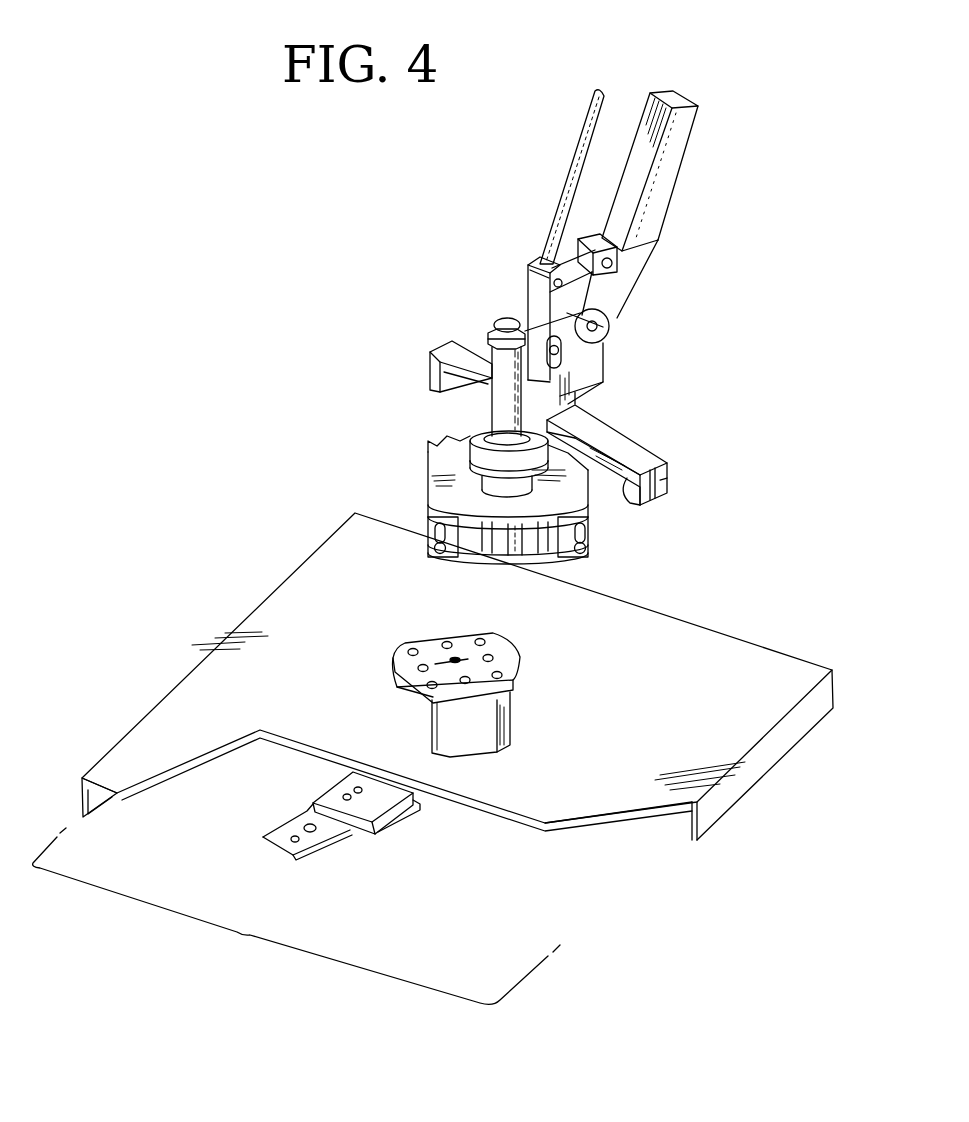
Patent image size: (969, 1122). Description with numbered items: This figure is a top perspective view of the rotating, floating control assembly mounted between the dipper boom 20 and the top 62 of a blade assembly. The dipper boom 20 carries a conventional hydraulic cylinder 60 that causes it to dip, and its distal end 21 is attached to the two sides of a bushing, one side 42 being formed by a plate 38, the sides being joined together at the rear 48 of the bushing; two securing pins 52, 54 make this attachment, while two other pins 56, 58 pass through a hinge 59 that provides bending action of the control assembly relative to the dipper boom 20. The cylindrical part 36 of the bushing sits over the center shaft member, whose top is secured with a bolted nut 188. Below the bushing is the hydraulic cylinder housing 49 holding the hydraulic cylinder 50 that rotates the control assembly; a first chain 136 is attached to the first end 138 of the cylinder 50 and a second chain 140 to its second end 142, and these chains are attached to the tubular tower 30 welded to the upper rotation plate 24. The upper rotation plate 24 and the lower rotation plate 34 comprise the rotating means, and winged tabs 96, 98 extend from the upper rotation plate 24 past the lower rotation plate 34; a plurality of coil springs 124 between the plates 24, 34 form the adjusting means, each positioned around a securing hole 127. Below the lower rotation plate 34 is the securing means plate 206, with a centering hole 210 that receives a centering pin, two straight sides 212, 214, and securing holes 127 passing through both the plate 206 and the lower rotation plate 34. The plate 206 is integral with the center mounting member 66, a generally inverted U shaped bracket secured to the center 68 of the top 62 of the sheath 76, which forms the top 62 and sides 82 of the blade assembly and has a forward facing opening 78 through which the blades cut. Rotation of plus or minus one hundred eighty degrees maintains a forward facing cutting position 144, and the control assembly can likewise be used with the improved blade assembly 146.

The dipper boom 20 is at (667, 177).
The hydraulic cylinder 60 is at (577, 152).
The pin 56 is at (620, 265).
The pin 58 is at (530, 273).
The distal end of the dipper boom 21 is at (622, 297).
The hinge 59 is at (605, 321).
The securing pin 52 is at (600, 328).
The securing pin 54 is at (562, 352).
The rear of the bushing 48 is at (608, 379).
The plate 38 is at (594, 388).
The side of the bushing 42 is at (584, 390).
The cylindrical part of the bushing 36 is at (488, 413).
The hydraulic cylinder housing 49 is at (650, 453).
The first end of the hydraulic cylinder 138 is at (664, 483).
The hydraulic cylinder 50 is at (630, 487).
The bolted nut 188 is at (490, 340).
The first chain 136 is at (470, 443).
The second end of the hydraulic cylinder 142 is at (487, 421).
The second chain 140 is at (433, 460).
The tower 30 is at (505, 485).
The upper rotation plate 24 is at (428, 488).
The lower rotation plate 34 is at (527, 566).
The coil springs 124 is at (502, 552).
The winged tab 98 is at (428, 511).
The winged tab 96 is at (590, 522).
The top of the blade assembly 62 is at (793, 673).
The sides of the blade assembly 82 is at (773, 753).
The sheath 76 is at (833, 723).
The forward facing opening 78 is at (586, 839).
The securing means plate 206 is at (400, 687).
The centering hole 210 is at (490, 658).
The straight side of the securing means plate 214 is at (413, 647).
The securing hole 127 is at (443, 642).
The center mounting member 66 is at (497, 750).
The center of the top of the blade assembly 68 is at (522, 708).
The straight side of the securing means plate 212 is at (490, 727).
The improved blade assembly 146 is at (221, 798).
The forward facing cutting position 144 is at (296, 916).